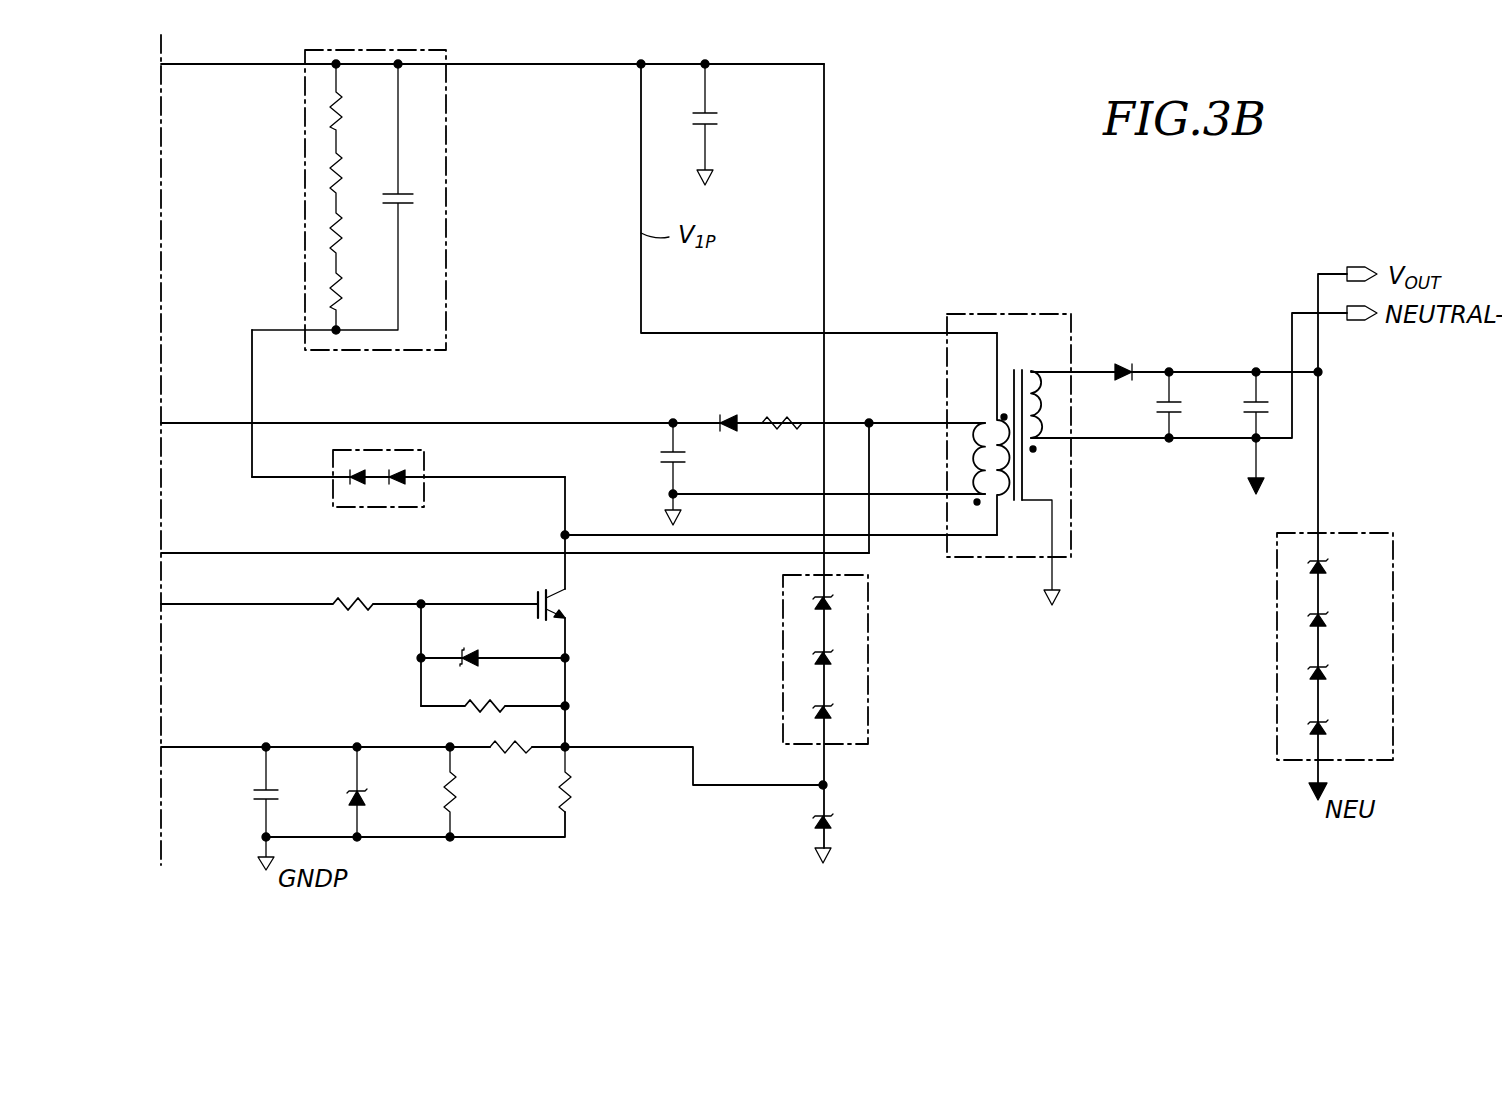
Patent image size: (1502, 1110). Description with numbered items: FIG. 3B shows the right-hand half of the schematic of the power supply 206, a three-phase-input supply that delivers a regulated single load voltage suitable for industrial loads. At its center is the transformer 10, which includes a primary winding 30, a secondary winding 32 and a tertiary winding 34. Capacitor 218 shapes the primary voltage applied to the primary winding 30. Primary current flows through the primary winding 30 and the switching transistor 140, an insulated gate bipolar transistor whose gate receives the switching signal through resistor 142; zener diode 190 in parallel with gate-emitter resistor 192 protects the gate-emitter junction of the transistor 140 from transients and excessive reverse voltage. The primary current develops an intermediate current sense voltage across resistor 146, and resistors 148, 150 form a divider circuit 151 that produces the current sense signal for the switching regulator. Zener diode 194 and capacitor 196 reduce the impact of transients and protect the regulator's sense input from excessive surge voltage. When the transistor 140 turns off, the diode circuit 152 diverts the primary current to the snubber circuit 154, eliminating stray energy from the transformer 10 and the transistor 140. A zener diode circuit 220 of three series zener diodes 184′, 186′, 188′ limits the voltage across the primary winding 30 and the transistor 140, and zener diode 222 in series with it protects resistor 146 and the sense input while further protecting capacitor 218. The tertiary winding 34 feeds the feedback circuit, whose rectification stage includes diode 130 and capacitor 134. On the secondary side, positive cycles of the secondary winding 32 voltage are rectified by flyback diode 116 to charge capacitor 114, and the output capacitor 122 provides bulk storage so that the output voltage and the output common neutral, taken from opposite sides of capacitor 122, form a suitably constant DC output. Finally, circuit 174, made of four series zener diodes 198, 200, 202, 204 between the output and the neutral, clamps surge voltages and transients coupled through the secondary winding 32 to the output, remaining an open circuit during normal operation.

The transformer 10 is at (1034, 459).
The primary winding 30 is at (1000, 497).
The secondary winding 32 is at (1032, 368).
The tertiary winding 34 is at (976, 424).
The capacitor 114 is at (1170, 414).
The flyback diode 116 is at (1122, 365).
The output capacitor 122 is at (1246, 404).
The diode 130 is at (725, 413).
The capacitor 134 is at (682, 458).
The switching transistor 140 is at (566, 612).
The resistor 142 is at (330, 620).
The resistor 146 is at (571, 788).
The resistor 148 is at (497, 754).
The resistor 150 is at (444, 784).
The divider circuit 151 is at (533, 818).
The diode circuit 152 is at (424, 496).
The snubber circuit 154 is at (446, 340).
The zener diode circuit 174 is at (1358, 667).
The zener diode 184′ is at (812, 603).
The zener diode 186′ is at (812, 657).
The zener diode 188′ is at (812, 711).
The zener diode 190 is at (470, 652).
The gate-emitter resistor 192 is at (490, 700).
The zener diode 194 is at (349, 789).
The capacitor 196 is at (256, 789).
The zener diode 198 is at (1327, 568).
The zener diode 200 is at (1327, 621).
The zener diode 202 is at (1327, 674).
The zener diode 204 is at (1327, 729).
The power supply 206 is at (1098, 827).
The capacitor 218 is at (712, 125).
The zener diode circuit 220 is at (828, 673).
The zener diode 222 is at (811, 830).